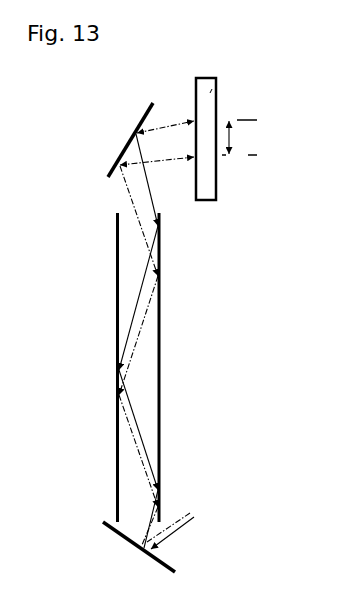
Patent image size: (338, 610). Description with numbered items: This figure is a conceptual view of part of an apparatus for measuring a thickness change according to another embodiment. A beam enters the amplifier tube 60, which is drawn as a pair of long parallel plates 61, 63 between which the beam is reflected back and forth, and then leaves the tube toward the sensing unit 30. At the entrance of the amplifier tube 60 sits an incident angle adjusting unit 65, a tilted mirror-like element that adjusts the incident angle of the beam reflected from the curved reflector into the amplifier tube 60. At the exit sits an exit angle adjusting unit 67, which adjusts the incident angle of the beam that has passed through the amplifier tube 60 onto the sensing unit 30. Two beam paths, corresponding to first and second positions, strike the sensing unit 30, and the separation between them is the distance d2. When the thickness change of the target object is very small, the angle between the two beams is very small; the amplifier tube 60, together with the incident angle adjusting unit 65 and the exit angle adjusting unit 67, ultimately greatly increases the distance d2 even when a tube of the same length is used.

The sensing unit 30 is at (217, 80).
The exit angle adjusting unit 67 is at (135, 108).
The amplifier tube 60 is at (196, 367).
The first plate 61 is at (122, 314).
The second plate 63 is at (162, 291).
The incident angle adjusting unit 65 is at (110, 531).
The distance between the first and second positions on the sensing unit d2 is at (256, 137).